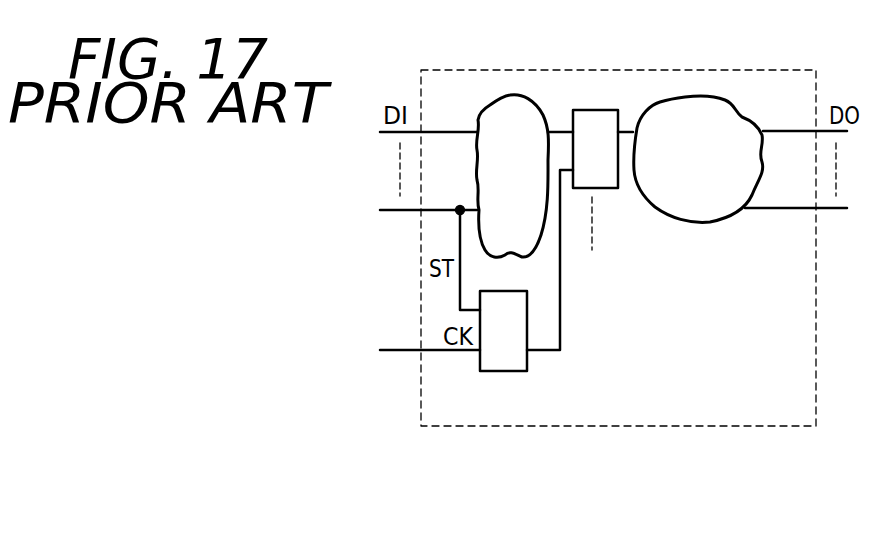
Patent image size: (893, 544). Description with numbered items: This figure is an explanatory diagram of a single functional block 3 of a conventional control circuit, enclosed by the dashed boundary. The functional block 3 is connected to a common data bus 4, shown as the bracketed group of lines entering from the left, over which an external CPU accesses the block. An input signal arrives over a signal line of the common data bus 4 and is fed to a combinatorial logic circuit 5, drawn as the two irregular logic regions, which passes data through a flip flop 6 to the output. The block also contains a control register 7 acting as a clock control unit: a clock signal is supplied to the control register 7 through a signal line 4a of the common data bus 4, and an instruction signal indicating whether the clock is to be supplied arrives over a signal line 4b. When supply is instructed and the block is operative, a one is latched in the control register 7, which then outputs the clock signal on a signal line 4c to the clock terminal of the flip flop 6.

The functional block 3 is at (788, 300).
The common data bus 4 is at (369, 120).
The signal line 4a is at (462, 276).
The signal line 4b is at (401, 352).
The signal line 4c is at (541, 352).
The combinatorial logic circuit 5 is at (676, 117).
The flip flop 6 is at (601, 180).
The control register 7 is at (493, 362).